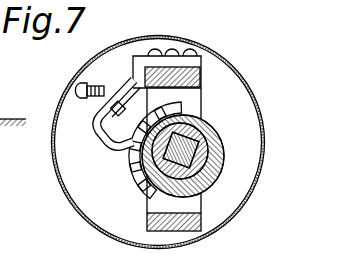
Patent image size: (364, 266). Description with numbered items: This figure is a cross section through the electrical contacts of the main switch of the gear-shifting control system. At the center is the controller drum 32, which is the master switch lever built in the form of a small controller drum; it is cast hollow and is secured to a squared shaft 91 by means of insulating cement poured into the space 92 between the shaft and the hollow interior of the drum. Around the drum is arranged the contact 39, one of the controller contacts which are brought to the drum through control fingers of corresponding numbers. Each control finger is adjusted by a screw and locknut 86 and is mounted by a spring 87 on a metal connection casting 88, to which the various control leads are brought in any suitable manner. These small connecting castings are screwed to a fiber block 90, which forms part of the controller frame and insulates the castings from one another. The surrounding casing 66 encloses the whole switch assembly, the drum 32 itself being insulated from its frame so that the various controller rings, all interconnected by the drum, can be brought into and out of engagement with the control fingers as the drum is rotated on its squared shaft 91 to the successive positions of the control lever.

The casing 66 is at (259, 134).
The metal connection casting 88 is at (164, 62).
The fiber block 90 is at (199, 70).
The contact 39 is at (146, 186).
The controller drum 32 is at (206, 188).
The space for insulating cement 92 is at (203, 157).
The squared shaft 91 is at (188, 150).
The spring 87 is at (127, 79).
The screw and locknut 86 is at (98, 108).